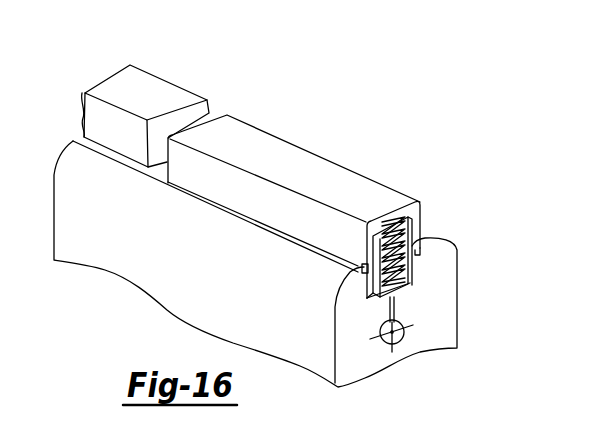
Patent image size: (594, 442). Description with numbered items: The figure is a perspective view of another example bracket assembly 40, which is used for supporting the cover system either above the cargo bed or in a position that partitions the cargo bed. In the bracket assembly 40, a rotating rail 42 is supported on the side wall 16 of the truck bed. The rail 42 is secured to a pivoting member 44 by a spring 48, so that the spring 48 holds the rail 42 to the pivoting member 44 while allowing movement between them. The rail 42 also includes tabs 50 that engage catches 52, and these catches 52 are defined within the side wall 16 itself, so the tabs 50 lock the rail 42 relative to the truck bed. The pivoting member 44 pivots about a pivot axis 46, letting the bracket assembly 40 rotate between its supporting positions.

The side wall 16 is at (457, 307).
The bracket assembly 40 is at (378, 168).
The rotating rail 42 is at (386, 212).
The pivoting member 44 is at (401, 250).
The pivot axis 46 is at (397, 330).
The spring 48 is at (404, 306).
The tabs 50 is at (361, 268).
The catches 52 is at (368, 288).